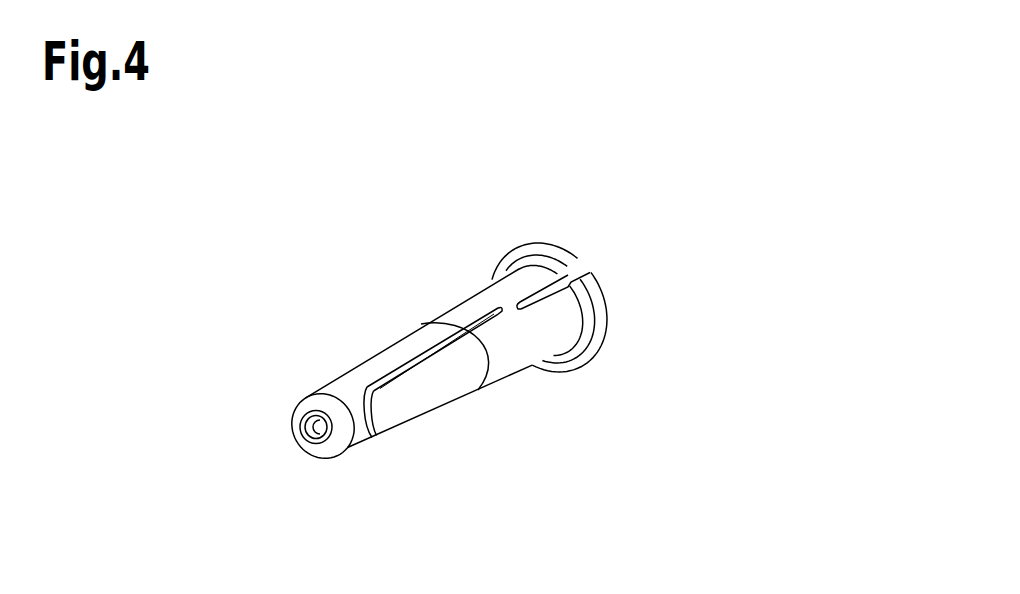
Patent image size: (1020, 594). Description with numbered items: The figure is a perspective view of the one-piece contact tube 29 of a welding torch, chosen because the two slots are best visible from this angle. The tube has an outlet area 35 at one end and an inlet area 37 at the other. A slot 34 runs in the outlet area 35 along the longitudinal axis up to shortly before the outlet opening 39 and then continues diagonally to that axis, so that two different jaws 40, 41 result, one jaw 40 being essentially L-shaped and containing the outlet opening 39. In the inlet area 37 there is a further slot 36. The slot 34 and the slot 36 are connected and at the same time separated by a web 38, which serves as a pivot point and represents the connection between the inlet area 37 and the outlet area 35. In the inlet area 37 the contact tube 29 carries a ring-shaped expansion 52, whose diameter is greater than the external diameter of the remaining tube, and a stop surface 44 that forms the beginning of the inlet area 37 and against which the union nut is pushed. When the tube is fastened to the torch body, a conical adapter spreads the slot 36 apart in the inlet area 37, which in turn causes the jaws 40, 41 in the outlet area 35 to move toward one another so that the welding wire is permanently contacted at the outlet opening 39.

The contact tube 29 is at (367, 233).
The outlet area 35 is at (355, 322).
The inlet area 37 is at (472, 250).
The slot 36 is at (568, 275).
The ring-shaped expansion 52 is at (622, 323).
The stop surface 44 is at (580, 343).
The web 38 is at (514, 311).
The jaw 41 is at (427, 392).
The slot 34 is at (373, 420).
The outlet opening 39 is at (318, 433).
The jaw 40 is at (352, 382).